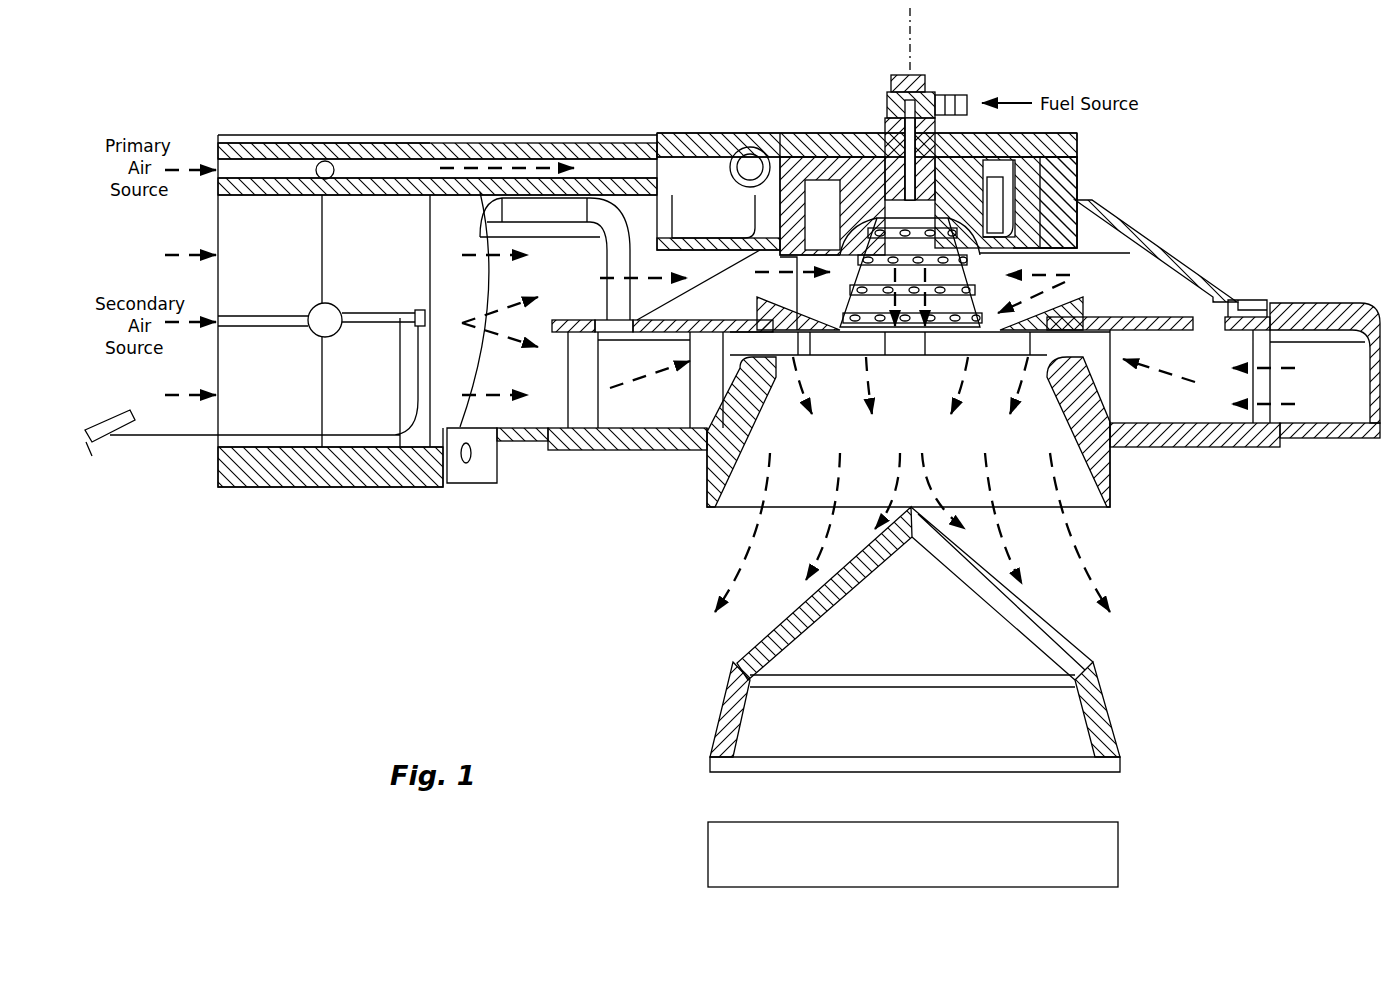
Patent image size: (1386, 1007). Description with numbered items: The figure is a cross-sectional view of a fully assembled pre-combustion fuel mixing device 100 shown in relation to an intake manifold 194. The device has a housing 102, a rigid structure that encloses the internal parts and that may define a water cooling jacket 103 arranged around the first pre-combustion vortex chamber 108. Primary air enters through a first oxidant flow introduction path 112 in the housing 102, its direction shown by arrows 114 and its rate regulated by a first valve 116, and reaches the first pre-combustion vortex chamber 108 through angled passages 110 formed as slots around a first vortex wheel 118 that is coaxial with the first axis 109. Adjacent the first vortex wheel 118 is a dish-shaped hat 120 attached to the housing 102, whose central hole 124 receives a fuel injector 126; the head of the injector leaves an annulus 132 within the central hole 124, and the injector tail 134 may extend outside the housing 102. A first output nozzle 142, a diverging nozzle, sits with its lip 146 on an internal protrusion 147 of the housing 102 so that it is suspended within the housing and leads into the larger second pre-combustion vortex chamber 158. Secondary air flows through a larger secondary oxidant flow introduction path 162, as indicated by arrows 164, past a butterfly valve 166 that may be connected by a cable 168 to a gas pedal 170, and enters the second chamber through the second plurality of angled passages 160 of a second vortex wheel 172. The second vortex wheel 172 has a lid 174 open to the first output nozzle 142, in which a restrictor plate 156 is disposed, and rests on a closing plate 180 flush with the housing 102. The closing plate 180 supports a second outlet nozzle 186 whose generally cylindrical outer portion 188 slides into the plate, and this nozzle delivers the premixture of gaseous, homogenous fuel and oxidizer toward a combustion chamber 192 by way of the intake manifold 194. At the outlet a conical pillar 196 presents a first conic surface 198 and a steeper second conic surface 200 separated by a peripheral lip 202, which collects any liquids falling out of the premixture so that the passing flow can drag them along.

The pre-combustion fuel mixing device 100 is at (357, 78).
The housing 102 is at (540, 136).
The water cooling jacket 103 is at (698, 134).
The first pre-combustion vortex chamber 108 is at (997, 218).
The first axis 109 is at (912, 35).
The angled passages 110 is at (827, 135).
The first oxidant flow introduction path 112 is at (443, 137).
The arrows 114 is at (517, 137).
The first valve 116 is at (700, 134).
The first vortex wheel 118 is at (810, 134).
The hat 120 is at (1033, 182).
The central hole 124 is at (985, 132).
The fuel injector 126 is at (893, 70).
The annulus 132 is at (975, 130).
The tail 134 is at (877, 130).
The first output nozzle 142 is at (1073, 300).
The lip 146 is at (1030, 240).
The internal protrusion 147 is at (1053, 258).
The restrictor plate 156 is at (1083, 307).
The second pre-combustion vortex chamber 158 is at (1223, 300).
The second plurality of angled passages 160 is at (637, 408).
The secondary oxidant flow introduction path 162 is at (275, 280).
The arrows 164 is at (515, 353).
The butterfly valve 166 is at (400, 447).
The cable 168 is at (205, 440).
The gas pedal 170 is at (86, 450).
The second vortex wheel 172 is at (587, 408).
The lid 174 is at (710, 325).
The closing plate 180 is at (1155, 450).
The second outlet nozzle 186 is at (1120, 485).
The generally cylindrical outer portion 188 is at (1105, 412).
The combustion chamber 192 is at (1118, 840).
The intake manifold 194 is at (1118, 780).
The conical pillar 196 is at (1105, 718).
The first conic surface 198 is at (745, 642).
The second conic surface 200 is at (712, 745).
The peripheral lip 202 is at (1090, 660).